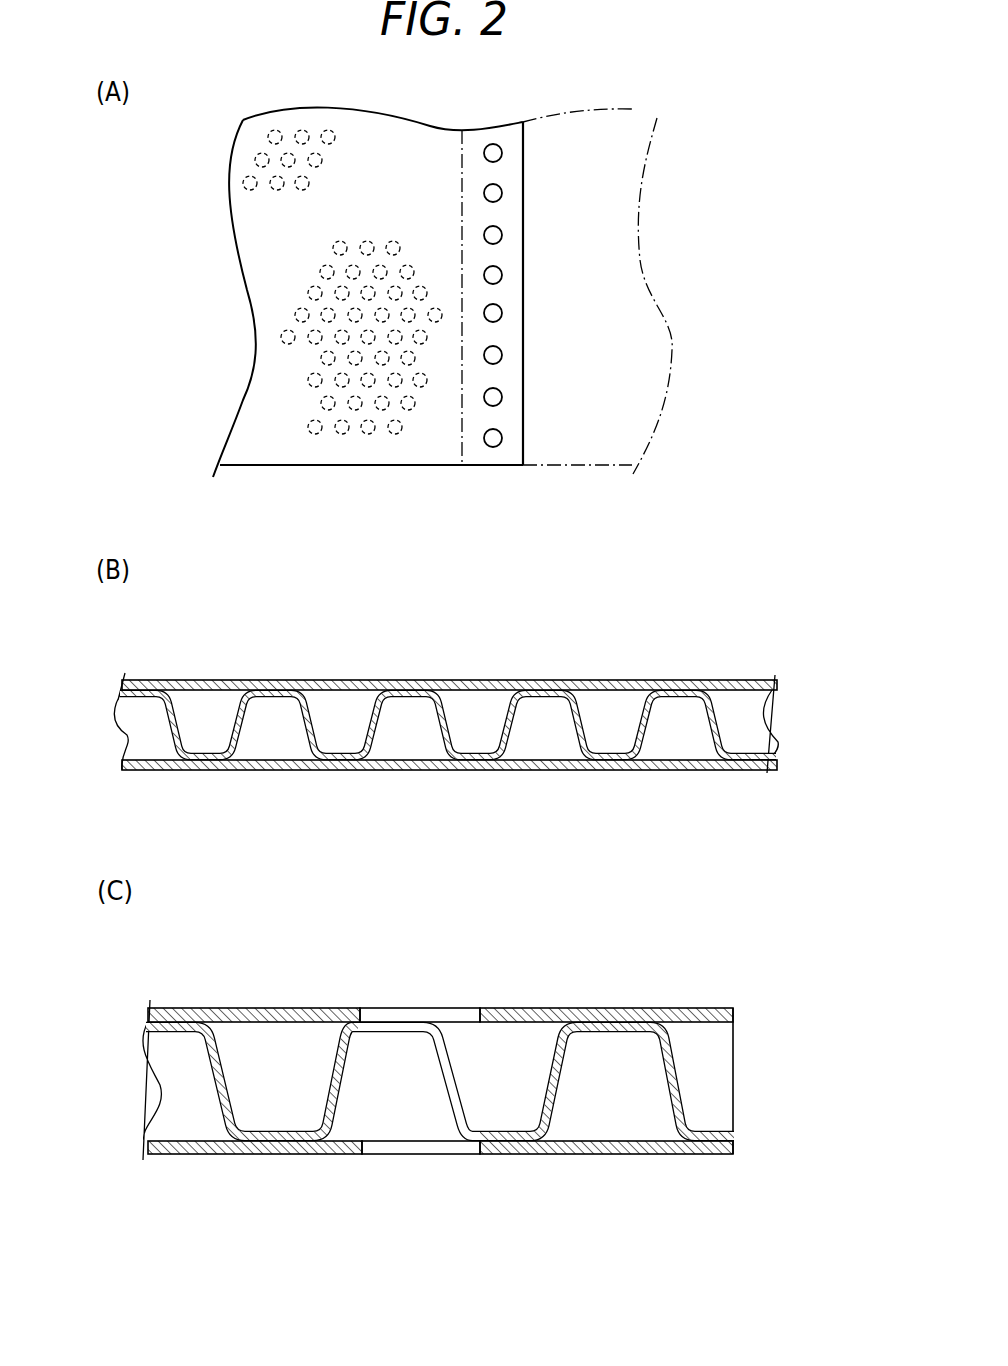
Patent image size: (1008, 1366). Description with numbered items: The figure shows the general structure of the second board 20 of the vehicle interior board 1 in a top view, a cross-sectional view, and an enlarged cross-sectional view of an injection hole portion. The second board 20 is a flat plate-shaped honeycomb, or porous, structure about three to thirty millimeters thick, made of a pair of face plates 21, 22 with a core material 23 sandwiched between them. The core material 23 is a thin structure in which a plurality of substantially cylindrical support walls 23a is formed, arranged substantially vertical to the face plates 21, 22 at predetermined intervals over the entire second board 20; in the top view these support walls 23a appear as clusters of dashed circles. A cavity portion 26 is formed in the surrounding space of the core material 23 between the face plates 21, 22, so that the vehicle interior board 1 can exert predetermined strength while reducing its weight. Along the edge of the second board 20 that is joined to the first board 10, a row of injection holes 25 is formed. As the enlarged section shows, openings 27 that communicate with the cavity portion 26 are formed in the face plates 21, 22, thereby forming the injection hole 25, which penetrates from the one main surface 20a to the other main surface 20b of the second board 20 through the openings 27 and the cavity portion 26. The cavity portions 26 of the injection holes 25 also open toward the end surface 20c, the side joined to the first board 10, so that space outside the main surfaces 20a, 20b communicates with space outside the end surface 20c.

The vehicle interior board 1 is at (769, 111).
The first board 10 is at (684, 229).
The second board 20 is at (198, 165).
The one main surface 20a is at (644, 1008).
The other main surface 20b is at (650, 1154).
The end surface 20c is at (524, 378).
The face plate 21 is at (289, 681).
The face plate 22 is at (294, 772).
The core material 23 is at (171, 717).
The support wall 23a is at (290, 304).
The injection hole 25 is at (502, 274).
The cavity portion 26 is at (475, 714).
The opening 27 is at (456, 1008).